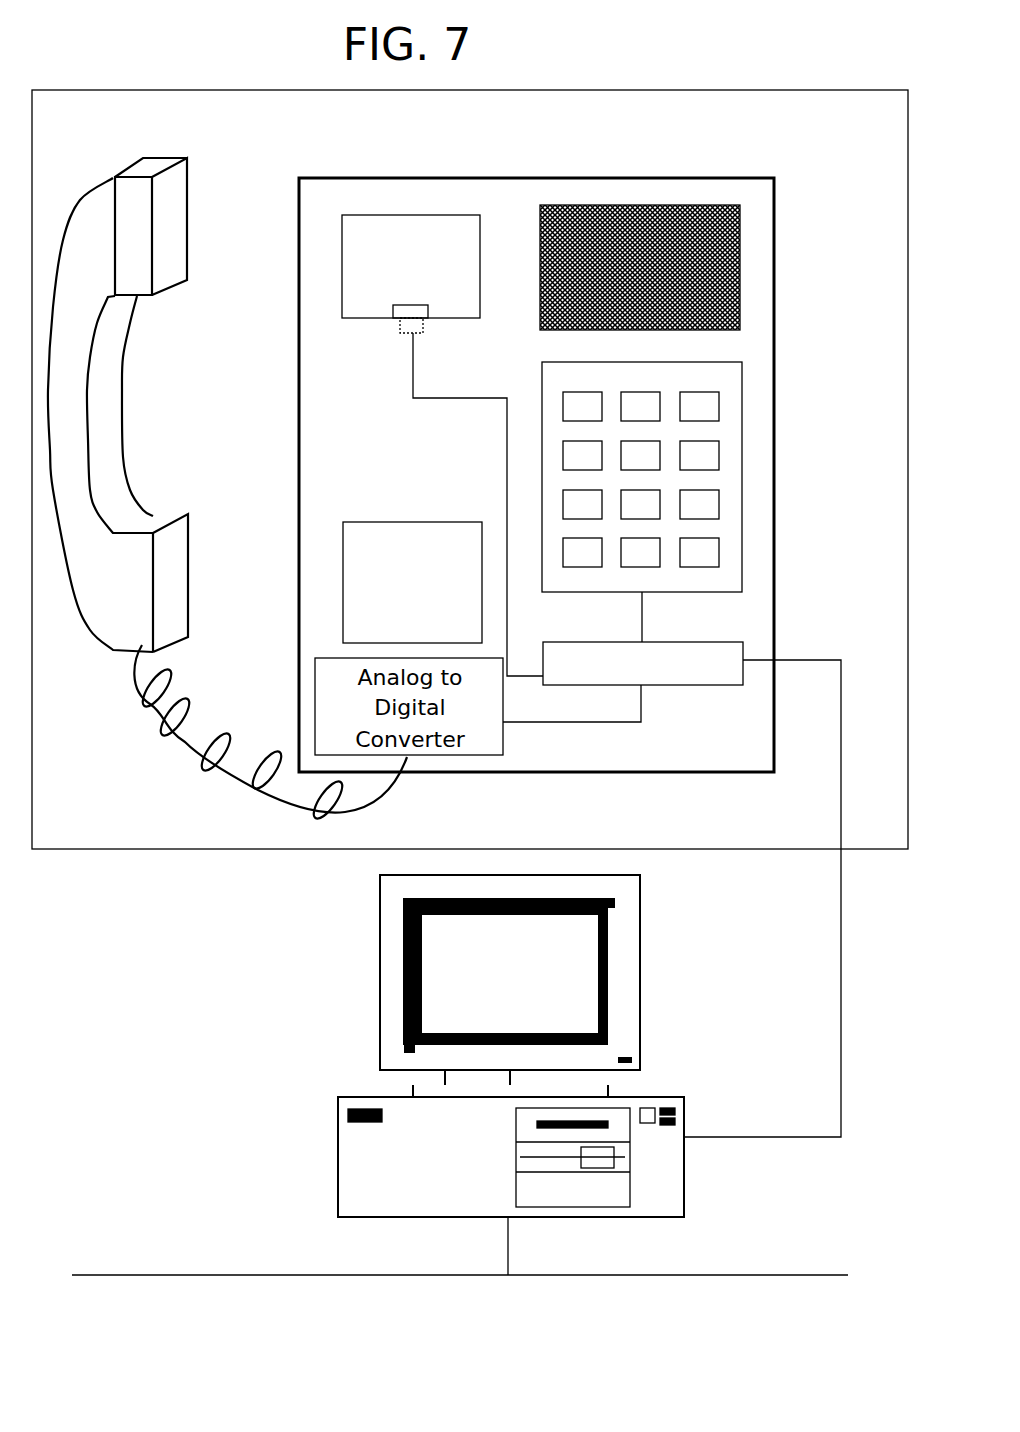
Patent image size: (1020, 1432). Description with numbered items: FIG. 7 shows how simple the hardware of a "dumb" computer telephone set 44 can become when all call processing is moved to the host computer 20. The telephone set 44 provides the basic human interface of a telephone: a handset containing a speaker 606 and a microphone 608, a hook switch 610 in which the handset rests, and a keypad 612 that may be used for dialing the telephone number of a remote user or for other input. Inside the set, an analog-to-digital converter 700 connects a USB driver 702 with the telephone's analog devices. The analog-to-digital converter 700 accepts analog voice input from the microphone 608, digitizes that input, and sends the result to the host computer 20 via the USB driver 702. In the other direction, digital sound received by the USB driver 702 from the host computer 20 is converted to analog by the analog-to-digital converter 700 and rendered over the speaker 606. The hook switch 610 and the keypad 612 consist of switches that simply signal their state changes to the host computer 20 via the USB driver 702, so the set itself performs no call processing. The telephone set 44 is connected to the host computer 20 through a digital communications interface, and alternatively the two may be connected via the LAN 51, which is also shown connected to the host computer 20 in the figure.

The computer telephone set 44 is at (63, 850).
The speaker 606 is at (170, 222).
The microphone 608 is at (170, 570).
The hook switch 610 is at (408, 305).
The keypad 612 is at (742, 478).
The analog-to-digital converter 700 is at (450, 755).
The USB driver 702 is at (743, 650).
The host computer 20 is at (642, 983).
The LAN 51 is at (460, 1263).